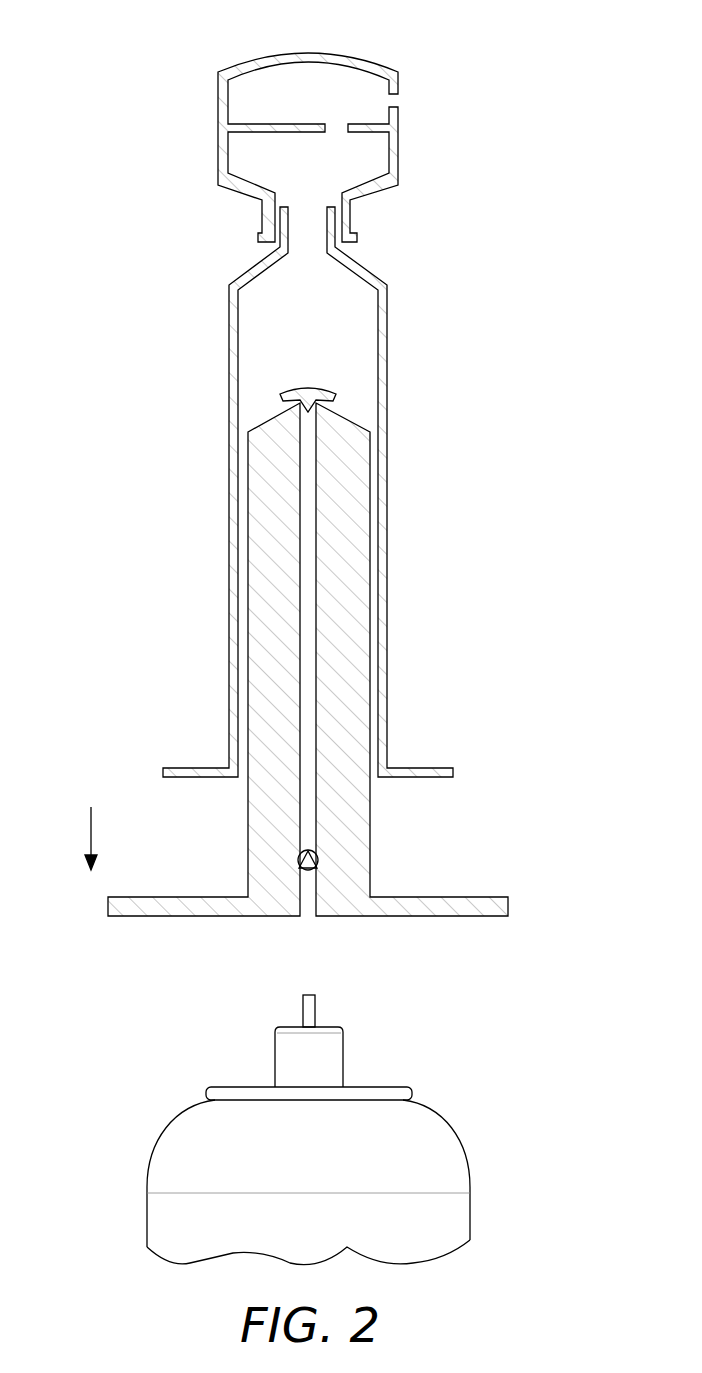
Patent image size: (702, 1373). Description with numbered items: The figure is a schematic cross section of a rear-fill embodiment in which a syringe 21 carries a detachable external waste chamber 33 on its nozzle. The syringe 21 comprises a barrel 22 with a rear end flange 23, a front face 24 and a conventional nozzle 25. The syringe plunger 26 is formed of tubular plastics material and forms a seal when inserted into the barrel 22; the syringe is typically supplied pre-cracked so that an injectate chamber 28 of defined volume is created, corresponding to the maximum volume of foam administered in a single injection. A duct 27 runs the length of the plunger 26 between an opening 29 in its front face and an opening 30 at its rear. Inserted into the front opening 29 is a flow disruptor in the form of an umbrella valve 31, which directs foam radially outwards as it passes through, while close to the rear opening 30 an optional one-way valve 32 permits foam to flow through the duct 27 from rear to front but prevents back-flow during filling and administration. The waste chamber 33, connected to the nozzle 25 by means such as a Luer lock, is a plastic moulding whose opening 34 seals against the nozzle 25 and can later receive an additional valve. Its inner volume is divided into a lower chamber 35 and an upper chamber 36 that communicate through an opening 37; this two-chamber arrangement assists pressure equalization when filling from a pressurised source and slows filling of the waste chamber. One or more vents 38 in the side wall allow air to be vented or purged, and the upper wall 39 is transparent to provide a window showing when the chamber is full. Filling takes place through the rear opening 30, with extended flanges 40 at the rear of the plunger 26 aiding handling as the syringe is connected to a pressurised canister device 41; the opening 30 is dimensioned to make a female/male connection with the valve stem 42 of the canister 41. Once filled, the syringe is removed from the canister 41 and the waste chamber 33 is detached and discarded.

The syringe 21 is at (91, 450).
The barrel 22 is at (388, 522).
The rear end flange 23 is at (453, 772).
The front face 24 is at (363, 258).
The nozzle 25 is at (303, 228).
The syringe plunger 26 is at (357, 687).
The duct 27 is at (308, 613).
The injectate chamber 28 is at (357, 325).
The opening in the front face of the plunger 29 is at (310, 430).
The opening at the rear of the plunger 30 is at (310, 917).
The umbrella valve 31 is at (303, 385).
The one-way valve 32 is at (313, 850).
The external waste chamber 33 is at (480, 53).
The opening of the waste chamber 34 is at (305, 193).
The lower chamber 35 is at (363, 163).
The upper chamber 36 is at (257, 107).
The opening 37 is at (335, 127).
The vent 38 is at (398, 97).
The upper wall of the waste chamber 39 is at (265, 56).
The extended flanges 40 is at (508, 903).
The pressurised canister device 41 is at (528, 995).
The valve stem 42 is at (315, 1003).